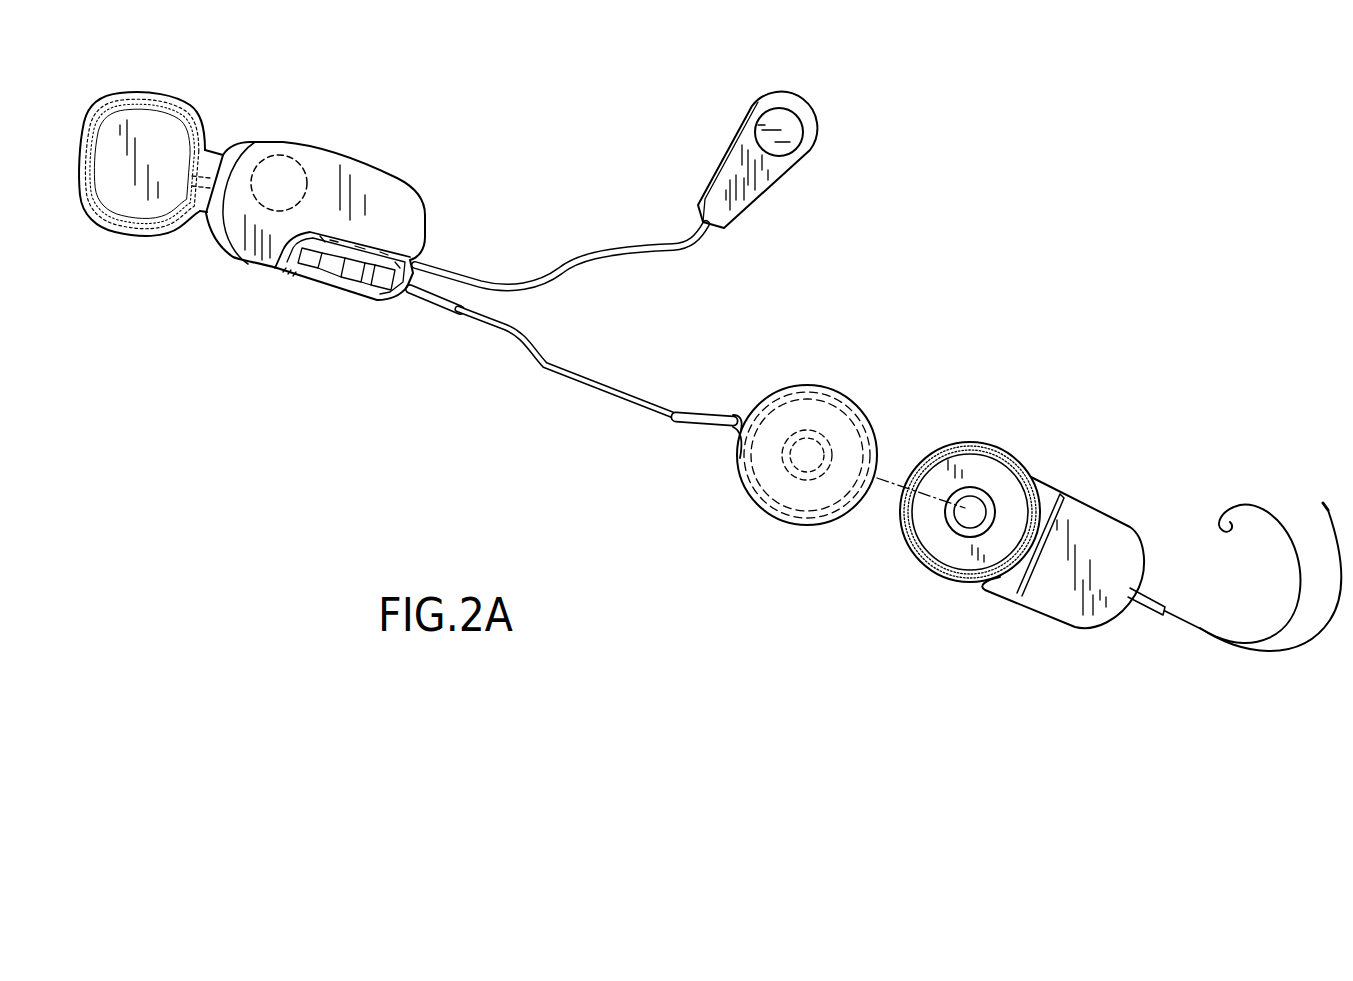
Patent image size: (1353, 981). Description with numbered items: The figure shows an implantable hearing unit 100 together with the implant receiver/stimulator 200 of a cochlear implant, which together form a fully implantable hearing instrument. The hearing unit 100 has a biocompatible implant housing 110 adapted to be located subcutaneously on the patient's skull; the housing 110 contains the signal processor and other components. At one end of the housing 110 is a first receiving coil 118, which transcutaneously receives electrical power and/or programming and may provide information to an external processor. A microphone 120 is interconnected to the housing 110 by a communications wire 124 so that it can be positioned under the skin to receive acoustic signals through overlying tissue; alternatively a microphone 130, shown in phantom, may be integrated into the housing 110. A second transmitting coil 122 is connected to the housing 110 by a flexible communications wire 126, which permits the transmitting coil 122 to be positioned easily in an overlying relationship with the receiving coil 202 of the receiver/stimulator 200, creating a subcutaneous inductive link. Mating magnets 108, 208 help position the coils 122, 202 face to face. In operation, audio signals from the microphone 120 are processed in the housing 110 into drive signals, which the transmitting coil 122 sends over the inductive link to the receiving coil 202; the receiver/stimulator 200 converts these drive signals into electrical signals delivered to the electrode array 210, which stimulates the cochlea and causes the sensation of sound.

The implantable hearing unit 100 is at (349, 209).
The mating magnet 108 is at (813, 453).
The implant housing 110 is at (245, 250).
The first receiving coil 118 is at (167, 130).
The microphone 120 is at (798, 103).
The second transmitting coil 122 is at (828, 488).
The communications wire 124 is at (578, 255).
The flexible communications wire 126 is at (547, 368).
The microphone 130 is at (313, 148).
The implant receiver/stimulator 200 is at (1022, 517).
The receiving coil 202 is at (947, 548).
The mating magnet 208 is at (975, 507).
The electrode array 210 is at (1213, 637).